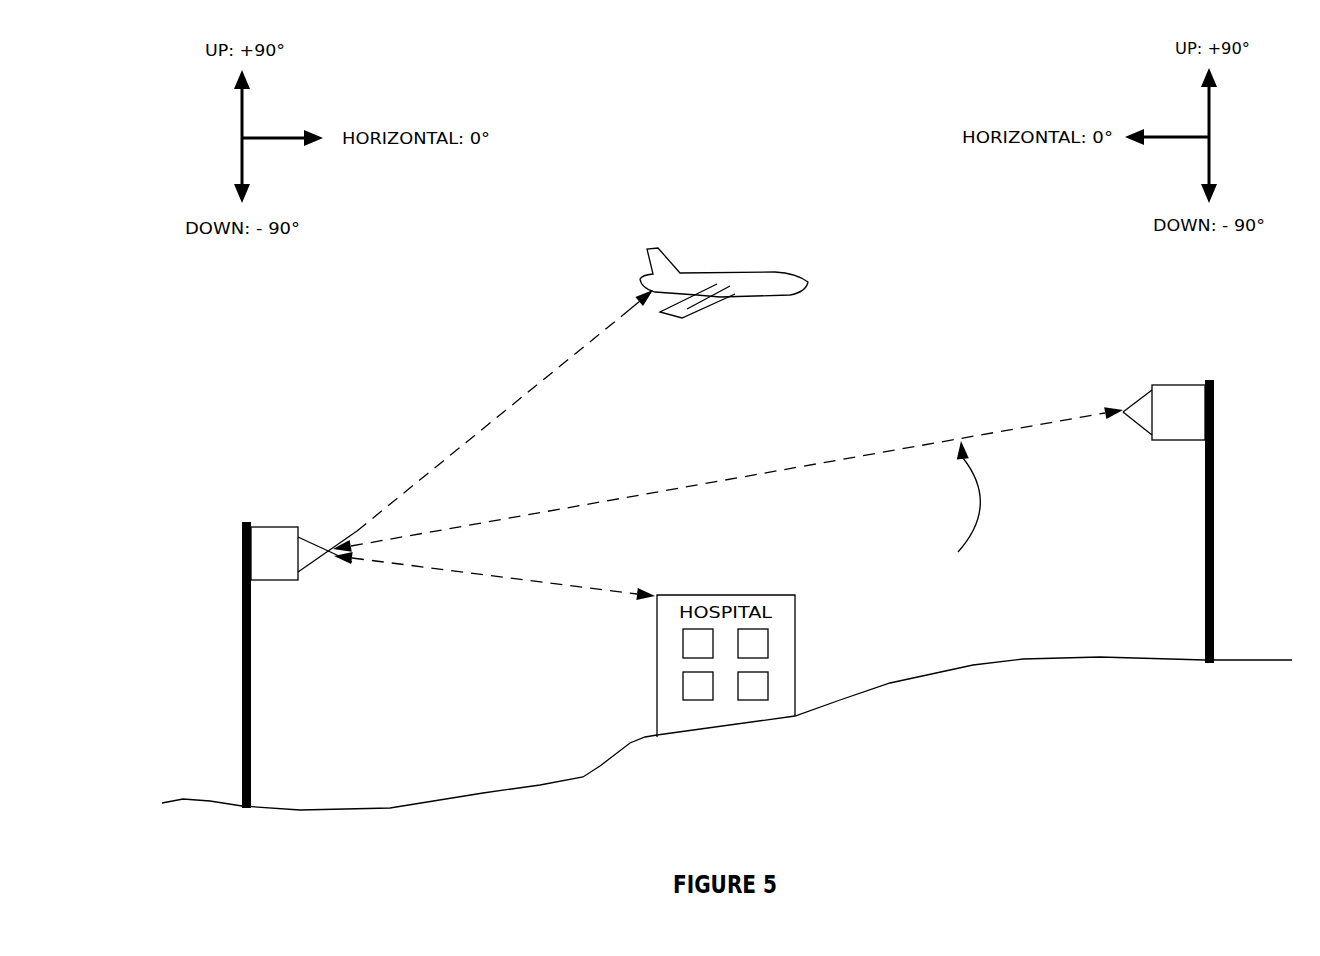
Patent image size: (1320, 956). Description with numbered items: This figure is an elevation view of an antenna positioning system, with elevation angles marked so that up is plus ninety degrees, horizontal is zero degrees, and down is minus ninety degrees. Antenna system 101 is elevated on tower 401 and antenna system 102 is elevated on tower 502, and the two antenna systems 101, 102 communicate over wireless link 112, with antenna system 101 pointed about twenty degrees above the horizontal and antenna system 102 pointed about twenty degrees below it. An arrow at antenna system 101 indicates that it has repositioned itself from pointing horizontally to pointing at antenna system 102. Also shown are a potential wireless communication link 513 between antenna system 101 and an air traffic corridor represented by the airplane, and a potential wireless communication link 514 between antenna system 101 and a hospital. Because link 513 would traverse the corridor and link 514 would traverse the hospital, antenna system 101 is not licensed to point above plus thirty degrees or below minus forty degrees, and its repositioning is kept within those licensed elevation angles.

The antenna system 101 is at (304, 553).
The antenna system 102 is at (1164, 412).
The wireless link 112 is at (628, 497).
The tower 401 is at (251, 664).
The tower 502 is at (1205, 541).
The potential wireless communication link 513 is at (474, 437).
The potential wireless communication link 514 is at (550, 583).